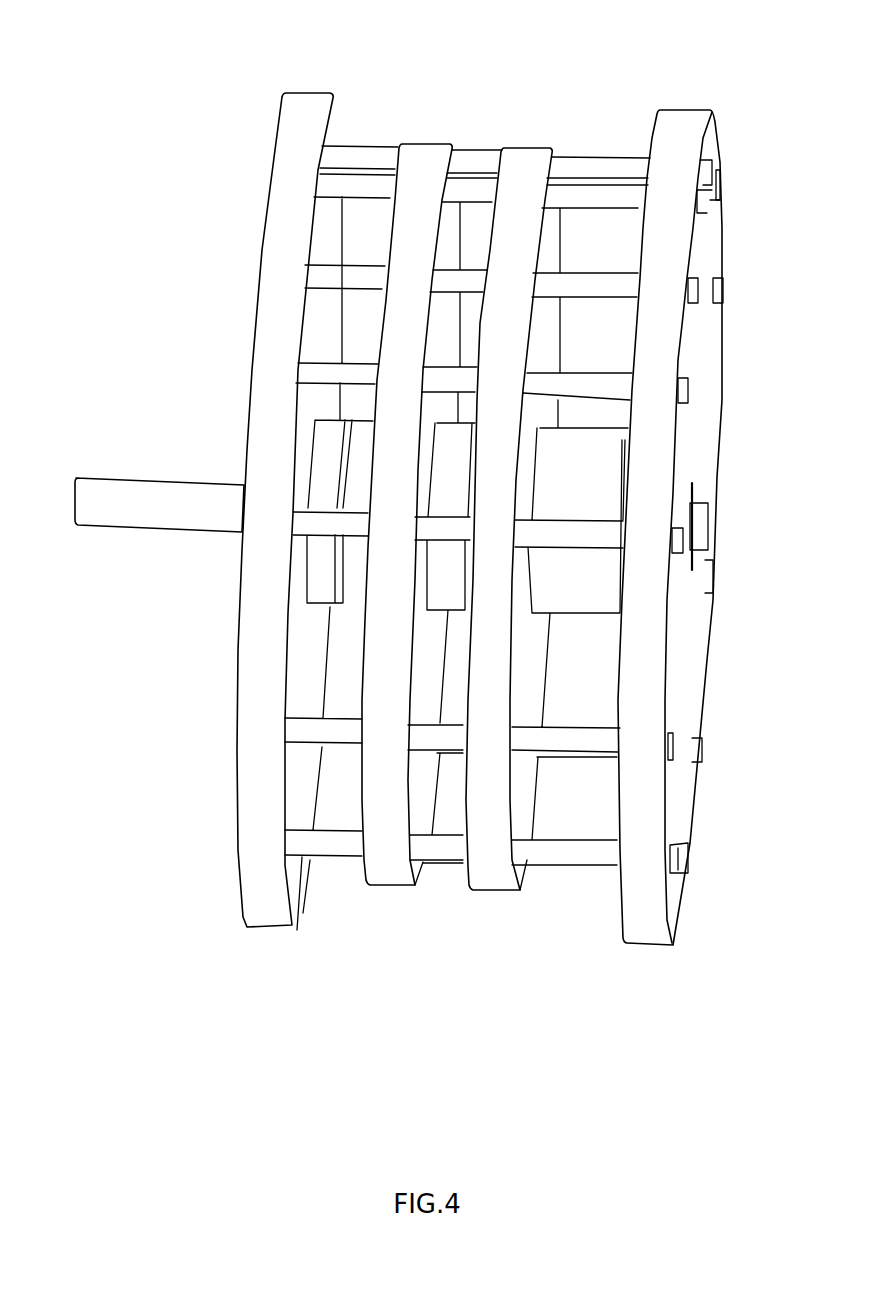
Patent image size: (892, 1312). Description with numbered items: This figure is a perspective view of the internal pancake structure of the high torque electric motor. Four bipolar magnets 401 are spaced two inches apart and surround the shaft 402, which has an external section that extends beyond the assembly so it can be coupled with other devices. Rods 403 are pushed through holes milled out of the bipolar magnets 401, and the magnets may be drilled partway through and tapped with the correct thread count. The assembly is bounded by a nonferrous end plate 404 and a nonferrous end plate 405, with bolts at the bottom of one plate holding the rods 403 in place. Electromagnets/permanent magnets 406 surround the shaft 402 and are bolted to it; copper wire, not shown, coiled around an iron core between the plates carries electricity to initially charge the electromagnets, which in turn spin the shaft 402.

The bipolar magnets 401 is at (427, 144).
The shaft 402 is at (168, 483).
The rods 403 is at (607, 153).
The nonferrous end plate 404 is at (283, 93).
The nonferrous end plate 405 is at (690, 862).
The electromagnets/permanent magnets 406 is at (348, 607).